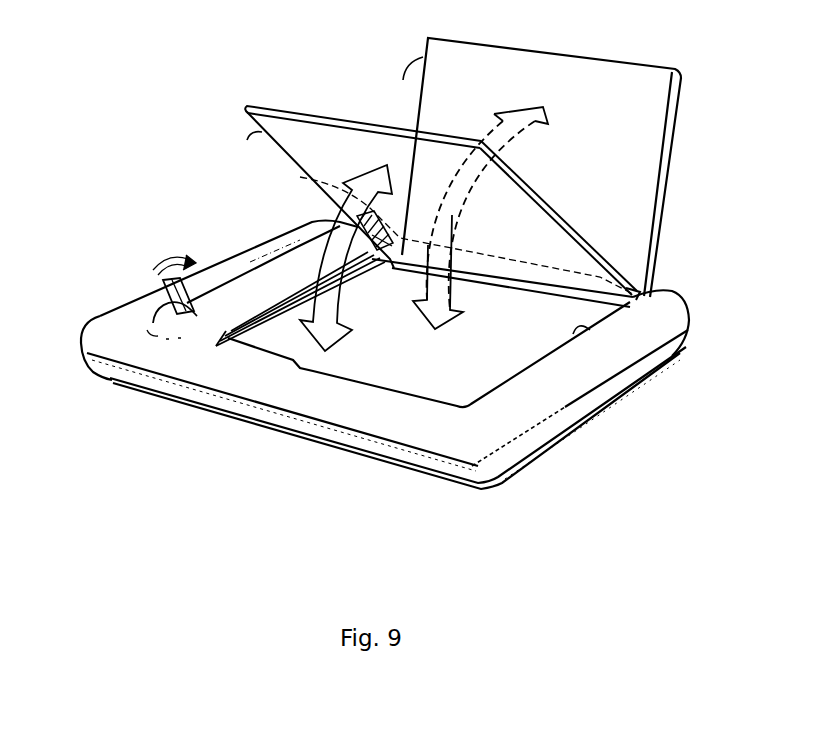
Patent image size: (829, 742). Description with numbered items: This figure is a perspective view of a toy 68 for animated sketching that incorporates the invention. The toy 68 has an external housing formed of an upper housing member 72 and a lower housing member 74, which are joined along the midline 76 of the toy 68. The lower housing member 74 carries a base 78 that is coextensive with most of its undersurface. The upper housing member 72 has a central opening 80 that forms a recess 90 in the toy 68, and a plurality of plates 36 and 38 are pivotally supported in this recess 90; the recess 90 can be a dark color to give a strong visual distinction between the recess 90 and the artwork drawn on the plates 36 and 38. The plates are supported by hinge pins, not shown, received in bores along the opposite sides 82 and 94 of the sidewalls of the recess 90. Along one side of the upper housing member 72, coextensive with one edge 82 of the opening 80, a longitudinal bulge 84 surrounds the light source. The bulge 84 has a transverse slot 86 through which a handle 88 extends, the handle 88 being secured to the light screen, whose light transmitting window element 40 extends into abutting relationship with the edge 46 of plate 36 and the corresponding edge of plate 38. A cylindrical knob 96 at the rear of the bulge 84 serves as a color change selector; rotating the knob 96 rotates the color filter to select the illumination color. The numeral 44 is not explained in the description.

The plate 36 is at (426, 40).
The plate 38 is at (246, 107).
The light transmitting window element 40 is at (376, 272).
The diagonal support strut 44 is at (304, 190).
The edge 46 is at (405, 79).
The toy 68 is at (502, 481).
The upper housing member 72 is at (523, 418).
The lower housing member 74 is at (527, 443).
The midline 76 is at (583, 395).
The base 78 is at (637, 385).
The central opening 80 is at (455, 378).
The edge 82 is at (257, 338).
The longitudinal bulge 84 is at (163, 319).
The transverse slot 86 is at (198, 328).
The handle 88 is at (163, 283).
The recess 90 is at (423, 357).
The side 94 is at (590, 330).
The cylindrical knob 96 is at (300, 177).